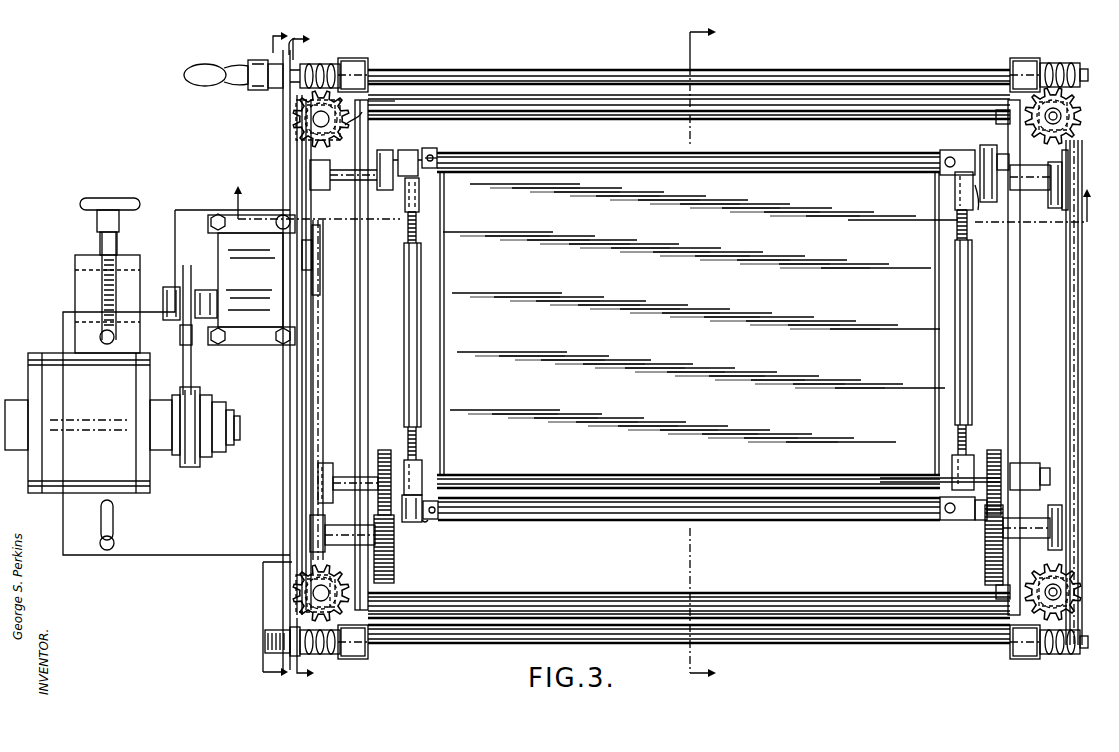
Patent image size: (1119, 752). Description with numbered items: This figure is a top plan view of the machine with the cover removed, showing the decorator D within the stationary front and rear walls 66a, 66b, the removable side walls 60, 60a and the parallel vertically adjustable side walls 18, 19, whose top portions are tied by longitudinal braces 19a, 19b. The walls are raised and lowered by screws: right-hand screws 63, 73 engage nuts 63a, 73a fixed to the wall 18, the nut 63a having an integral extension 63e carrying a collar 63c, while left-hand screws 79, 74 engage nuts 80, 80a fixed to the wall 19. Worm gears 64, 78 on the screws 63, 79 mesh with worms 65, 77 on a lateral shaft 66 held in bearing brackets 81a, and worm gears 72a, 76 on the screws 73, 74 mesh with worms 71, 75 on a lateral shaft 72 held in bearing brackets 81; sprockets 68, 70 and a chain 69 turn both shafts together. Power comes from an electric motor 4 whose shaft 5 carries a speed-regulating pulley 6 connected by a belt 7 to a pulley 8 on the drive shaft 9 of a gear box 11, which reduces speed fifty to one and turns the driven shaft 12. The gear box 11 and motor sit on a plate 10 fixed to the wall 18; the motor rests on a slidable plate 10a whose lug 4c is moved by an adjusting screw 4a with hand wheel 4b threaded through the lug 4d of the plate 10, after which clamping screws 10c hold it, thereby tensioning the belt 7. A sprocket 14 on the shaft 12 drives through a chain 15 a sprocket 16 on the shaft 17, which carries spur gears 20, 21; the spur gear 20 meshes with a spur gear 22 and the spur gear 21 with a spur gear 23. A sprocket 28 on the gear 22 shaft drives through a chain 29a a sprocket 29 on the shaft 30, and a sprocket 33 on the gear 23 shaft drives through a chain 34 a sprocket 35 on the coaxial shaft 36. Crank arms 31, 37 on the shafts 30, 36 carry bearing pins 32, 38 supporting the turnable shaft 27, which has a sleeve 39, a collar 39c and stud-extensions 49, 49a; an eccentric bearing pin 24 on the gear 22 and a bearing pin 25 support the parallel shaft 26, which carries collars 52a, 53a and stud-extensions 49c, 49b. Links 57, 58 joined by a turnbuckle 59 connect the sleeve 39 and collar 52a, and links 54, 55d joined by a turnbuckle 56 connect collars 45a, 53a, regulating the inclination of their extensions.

The electric motor 4 is at (146, 354).
The adjusting screw 4a is at (102, 288).
The hand wheel 4b is at (82, 207).
The downwardly bent lug 4c is at (75, 270).
The downwardly bent lug 4d is at (75, 322).
The motor shaft 5 is at (176, 455).
The pulley 6 is at (196, 392).
The belt 7 is at (168, 365).
The pulley 8 is at (180, 335).
The drive shaft 9 is at (164, 292).
The supporting plate 10 is at (186, 240).
The slidable plate 10a is at (75, 255).
The clamping screws 10c is at (100, 337).
The gear box 11 is at (251, 280).
The driven shaft 12 is at (316, 255).
The sprocket 14 is at (316, 236).
The chain 15 is at (323, 360).
The sprocket 16 is at (325, 462).
The shaft 17 is at (564, 478).
The vertically adjustable side wall 18 is at (366, 342).
The vertically adjustable side wall 19 is at (1020, 340).
The longitudinal bar or brace 19a is at (840, 118).
The longitudinal bar or brace 19b is at (640, 583).
The spur gear 20 is at (384, 450).
The companion spur gear 21 is at (995, 450).
The spur gear 22 is at (394, 562).
The spur gear 23 is at (985, 549).
The eccentric bearing pin 24 is at (405, 523).
The bearing pin 25 is at (978, 520).
The shaft 26 is at (570, 520).
The turnable shaft 27 is at (656, 172).
The sprocket 28 is at (310, 518).
The sprocket 29 is at (303, 152).
The chain 29a is at (318, 480).
The shaft 30 is at (310, 181).
The crank arm 31 is at (386, 150).
The bearing pin 32 is at (406, 150).
The sprocket 33 is at (1062, 506).
The chain 34 is at (1076, 254).
The sprocket 35 is at (1068, 160).
The shaft 36 is at (1062, 180).
The crank arm 37 is at (986, 145).
The bearing pin 38 is at (1009, 159).
The sleeve 39 is at (975, 150).
The collar 39c is at (1010, 200).
The collar 45a is at (440, 146).
The stud-extension 49 is at (945, 152).
The stud-extension 49a is at (440, 150).
The stud-extension 49b is at (432, 500).
The stud-extension 49c is at (940, 478).
The collar 52a is at (947, 520).
The collar 53a is at (430, 528).
The link 54 is at (420, 197).
The link 55d is at (424, 466).
The turnbuckle 56 is at (409, 300).
The link 57 is at (955, 201).
The link 58 is at (952, 457).
The turnbuckle 59 is at (966, 328).
The removable side wall 60 is at (297, 436).
The removable side wall 60a is at (1082, 341).
The screw 63 is at (232, 66).
The nut 63a is at (300, 135).
The collar 63c is at (375, 108).
The integral extension 63e is at (362, 130).
The worm gear 64 is at (312, 120).
The worm 65 is at (322, 66).
The lateral shaft 66 is at (728, 70).
The front wall 66a is at (748, 608).
The rear wall 66b is at (767, 105).
The sprocket 68 is at (291, 45).
The chain 69 is at (290, 655).
The sprocket 70 is at (265, 647).
The worm 71 is at (327, 656).
The lateral shaft 72 is at (766, 643).
The worm gear 72a is at (296, 603).
The screw 73 is at (312, 592).
The nut 73a is at (296, 576).
The screw 74 is at (1060, 585).
The worm 75 is at (1060, 655).
The worm gear 76 is at (1060, 588).
The worm 77 is at (1062, 64).
The worm gear 78 is at (1060, 113).
The screw 79 is at (1062, 112).
The nut 80 is at (1080, 132).
The nut 80a is at (1078, 598).
The bearing brackets 81 is at (378, 660).
The bearing brackets 81a is at (365, 62).
The decorator D is at (700, 315).